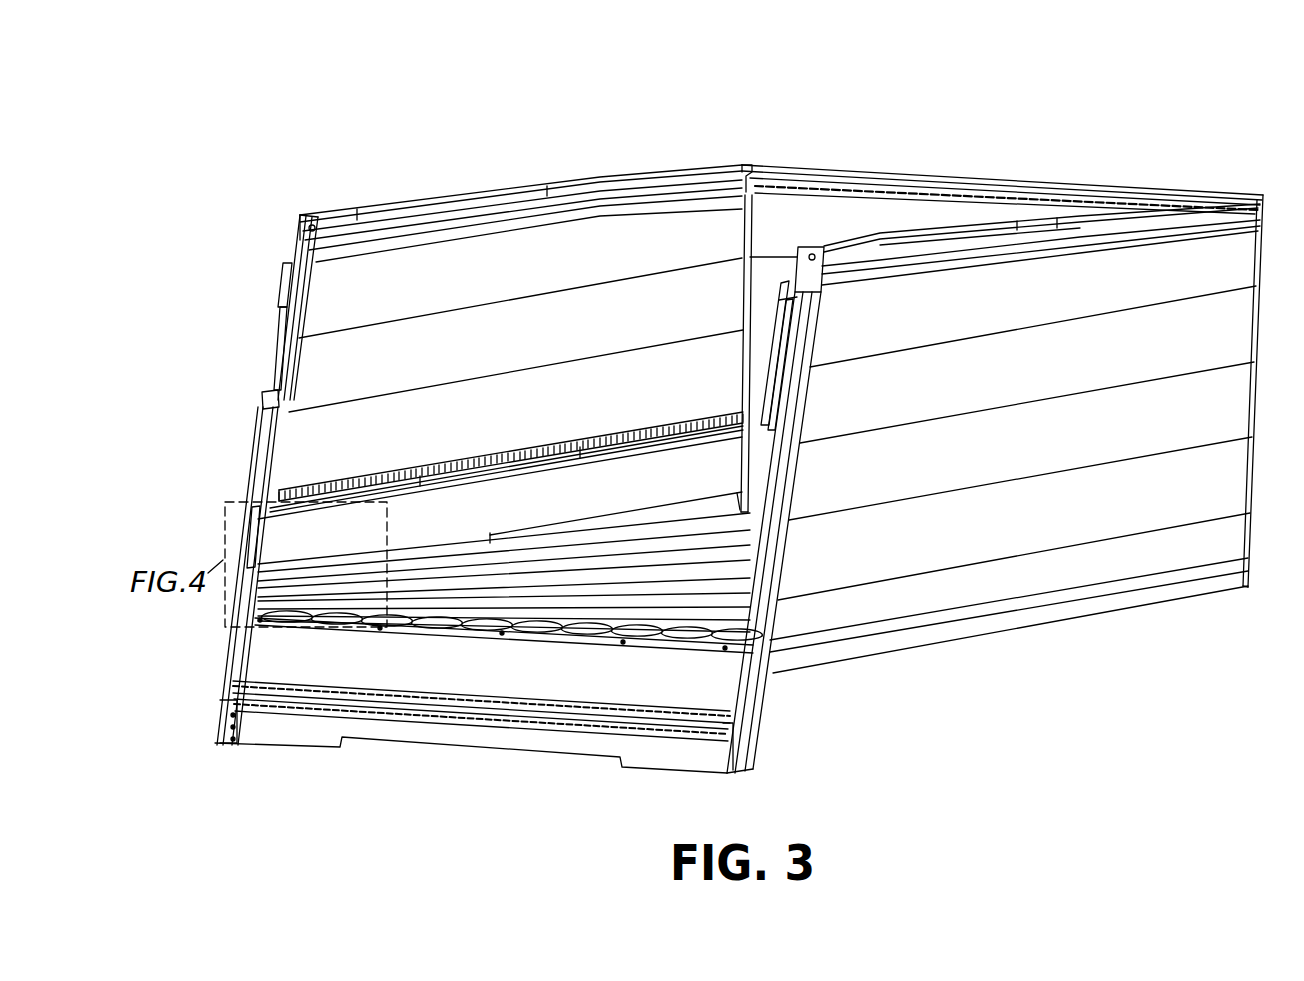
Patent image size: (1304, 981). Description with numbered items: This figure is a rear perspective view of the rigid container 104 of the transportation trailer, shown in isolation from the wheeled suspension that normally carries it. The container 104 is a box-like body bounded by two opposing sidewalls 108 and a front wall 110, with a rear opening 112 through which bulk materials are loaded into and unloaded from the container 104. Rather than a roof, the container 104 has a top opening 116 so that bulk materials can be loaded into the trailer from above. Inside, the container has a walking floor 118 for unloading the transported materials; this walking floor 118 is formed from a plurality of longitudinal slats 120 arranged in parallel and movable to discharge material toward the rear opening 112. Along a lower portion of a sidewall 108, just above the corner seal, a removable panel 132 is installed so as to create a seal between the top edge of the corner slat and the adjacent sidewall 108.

The rigid container 104 is at (502, 84).
The sidewall 108 is at (493, 263).
The front wall 110 is at (820, 212).
The rear opening 112 is at (225, 482).
The top opening 116 is at (793, 143).
The walking floor 118 is at (716, 582).
The longitudinal slats 120 is at (770, 640).
The removable panel 132 is at (533, 517).